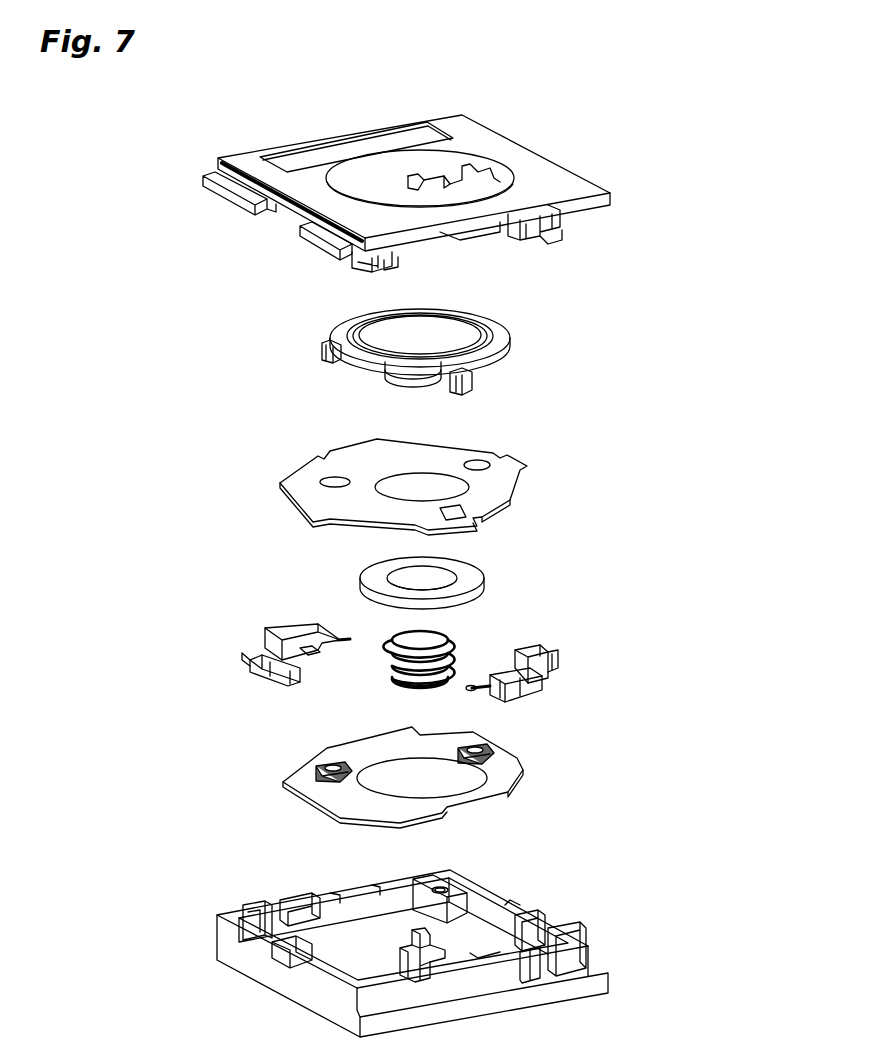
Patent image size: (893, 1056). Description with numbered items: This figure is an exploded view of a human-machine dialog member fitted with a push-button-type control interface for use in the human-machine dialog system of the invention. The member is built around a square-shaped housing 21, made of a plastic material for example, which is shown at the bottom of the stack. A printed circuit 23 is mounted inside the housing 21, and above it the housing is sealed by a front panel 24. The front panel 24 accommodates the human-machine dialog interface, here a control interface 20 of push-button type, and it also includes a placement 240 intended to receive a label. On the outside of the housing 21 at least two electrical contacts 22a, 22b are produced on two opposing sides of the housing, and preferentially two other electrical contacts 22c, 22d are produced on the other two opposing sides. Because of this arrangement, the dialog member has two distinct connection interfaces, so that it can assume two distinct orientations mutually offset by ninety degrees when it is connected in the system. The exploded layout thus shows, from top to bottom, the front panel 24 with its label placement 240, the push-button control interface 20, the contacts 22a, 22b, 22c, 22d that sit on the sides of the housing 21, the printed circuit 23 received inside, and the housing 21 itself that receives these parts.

The control interface 20 is at (342, 333).
The housing 21 is at (217, 938).
The electrical contact 22a is at (250, 658).
The electrical contact 22b is at (532, 645).
The electrical contact 22c is at (278, 632).
The electrical contact 22d is at (507, 700).
The printed circuit 23 is at (300, 768).
The front panel 24 is at (250, 162).
The placement 240 is at (377, 145).